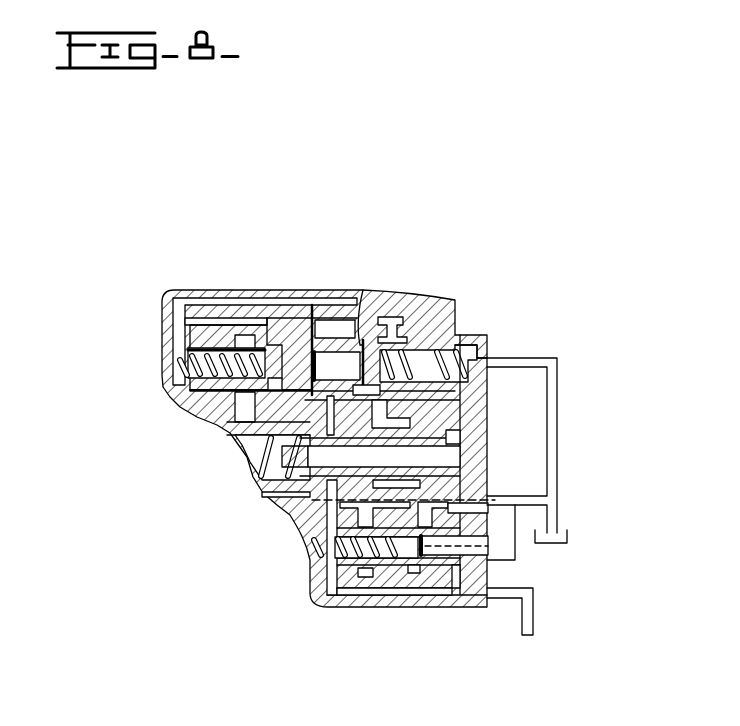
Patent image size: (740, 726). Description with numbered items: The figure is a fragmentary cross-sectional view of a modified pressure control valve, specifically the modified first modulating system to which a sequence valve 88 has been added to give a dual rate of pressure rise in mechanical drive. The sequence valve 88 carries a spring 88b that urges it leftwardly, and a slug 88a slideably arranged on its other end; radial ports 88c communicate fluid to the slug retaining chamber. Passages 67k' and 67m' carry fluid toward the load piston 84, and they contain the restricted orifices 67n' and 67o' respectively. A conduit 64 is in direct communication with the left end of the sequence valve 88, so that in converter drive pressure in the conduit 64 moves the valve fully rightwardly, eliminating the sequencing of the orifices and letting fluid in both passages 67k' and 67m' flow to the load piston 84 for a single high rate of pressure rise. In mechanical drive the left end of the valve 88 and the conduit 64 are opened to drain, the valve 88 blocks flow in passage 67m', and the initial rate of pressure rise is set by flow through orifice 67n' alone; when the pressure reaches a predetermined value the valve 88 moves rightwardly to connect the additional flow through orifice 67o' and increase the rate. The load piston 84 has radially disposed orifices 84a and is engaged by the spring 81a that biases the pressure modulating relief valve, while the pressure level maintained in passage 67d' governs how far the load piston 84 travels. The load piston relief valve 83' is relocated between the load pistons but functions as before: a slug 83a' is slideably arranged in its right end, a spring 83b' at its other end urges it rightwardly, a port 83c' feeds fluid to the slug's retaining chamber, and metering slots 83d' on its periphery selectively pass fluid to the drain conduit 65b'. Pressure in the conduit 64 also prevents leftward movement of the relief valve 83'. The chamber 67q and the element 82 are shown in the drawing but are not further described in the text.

The passage 67m' is at (231, 315).
The restricted orifice 67n' is at (271, 273).
The passage 67k' is at (302, 326).
The restricted orifice 67o' is at (360, 280).
The radial ports 88c is at (368, 332).
The sequence valve 88 is at (418, 334).
The spring 88b is at (484, 341).
The passage 67d' is at (460, 402).
The drain conduit 65b' is at (559, 450).
The radially disposed orifices 84a is at (458, 439).
The chamber 67q is at (517, 431).
The spring 82 is at (197, 349).
The spring 81a is at (238, 441).
The load piston 84 is at (287, 459).
The slug 88a is at (318, 404).
The spring 83b' is at (323, 548).
The metering slots 83d' is at (382, 605).
The port 83c' is at (436, 590).
The load piston relief valve 83' is at (425, 588).
The slug 83a' is at (539, 545).
The conduit 64 is at (535, 623).